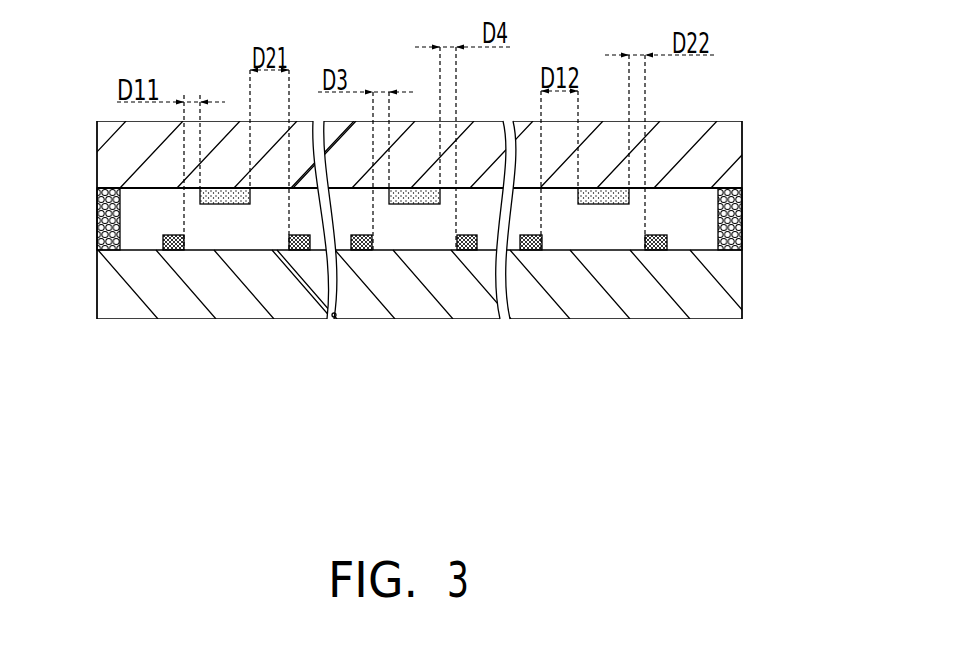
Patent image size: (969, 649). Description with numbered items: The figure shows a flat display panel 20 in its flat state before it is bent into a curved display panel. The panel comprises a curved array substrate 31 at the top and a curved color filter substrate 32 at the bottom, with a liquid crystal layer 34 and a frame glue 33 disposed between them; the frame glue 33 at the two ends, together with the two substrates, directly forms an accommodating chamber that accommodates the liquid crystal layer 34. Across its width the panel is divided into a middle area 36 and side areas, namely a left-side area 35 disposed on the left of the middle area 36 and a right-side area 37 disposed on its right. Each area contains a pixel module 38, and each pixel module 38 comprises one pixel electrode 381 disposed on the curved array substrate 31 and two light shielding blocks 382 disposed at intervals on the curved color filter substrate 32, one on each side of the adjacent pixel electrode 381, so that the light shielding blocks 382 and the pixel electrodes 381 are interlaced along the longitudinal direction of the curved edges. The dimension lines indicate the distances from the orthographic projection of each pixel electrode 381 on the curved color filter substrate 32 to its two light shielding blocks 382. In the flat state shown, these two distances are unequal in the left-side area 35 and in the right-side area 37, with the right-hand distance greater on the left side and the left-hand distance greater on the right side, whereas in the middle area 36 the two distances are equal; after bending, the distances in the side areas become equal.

The flat display panel 20 is at (755, 86).
The curved array substrate 31 is at (727, 135).
The curved color filter substrate 32 is at (717, 298).
The frame glue 33 is at (738, 196).
The liquid crystal layer 34 is at (702, 245).
The left-side area 35 is at (107, 348).
The middle area 36 is at (431, 346).
The right-side area 37 is at (668, 348).
The pixel module 38 is at (146, 221).
The pixel electrode 381 is at (227, 205).
The light shielding block 382 is at (170, 250).